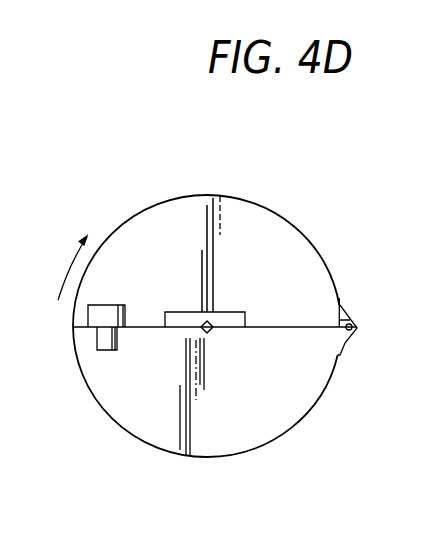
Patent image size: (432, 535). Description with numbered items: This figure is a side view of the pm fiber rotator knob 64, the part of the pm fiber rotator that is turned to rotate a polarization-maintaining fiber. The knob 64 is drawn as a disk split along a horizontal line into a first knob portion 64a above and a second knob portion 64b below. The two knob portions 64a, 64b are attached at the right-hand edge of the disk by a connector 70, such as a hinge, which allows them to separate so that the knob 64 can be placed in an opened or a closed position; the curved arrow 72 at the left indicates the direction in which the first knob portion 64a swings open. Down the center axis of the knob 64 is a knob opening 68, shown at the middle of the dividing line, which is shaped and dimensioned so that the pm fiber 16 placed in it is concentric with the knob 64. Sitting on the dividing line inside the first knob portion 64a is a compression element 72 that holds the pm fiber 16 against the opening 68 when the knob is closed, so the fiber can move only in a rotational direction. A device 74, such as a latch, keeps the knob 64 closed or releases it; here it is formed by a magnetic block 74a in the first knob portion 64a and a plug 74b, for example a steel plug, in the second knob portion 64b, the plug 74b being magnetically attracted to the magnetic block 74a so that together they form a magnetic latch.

The pm fiber 16 is at (203, 330).
The pm fiber rotator knob 64 is at (228, 286).
The first knob portion 64a is at (268, 208).
The second knob portion 64b is at (313, 408).
The knob opening 68 is at (210, 329).
The connector 70 is at (358, 328).
The compression element 72 is at (236, 311).
The device 74 is at (99, 305).
The magnetic block 74a is at (115, 304).
The plug 74b is at (106, 350).